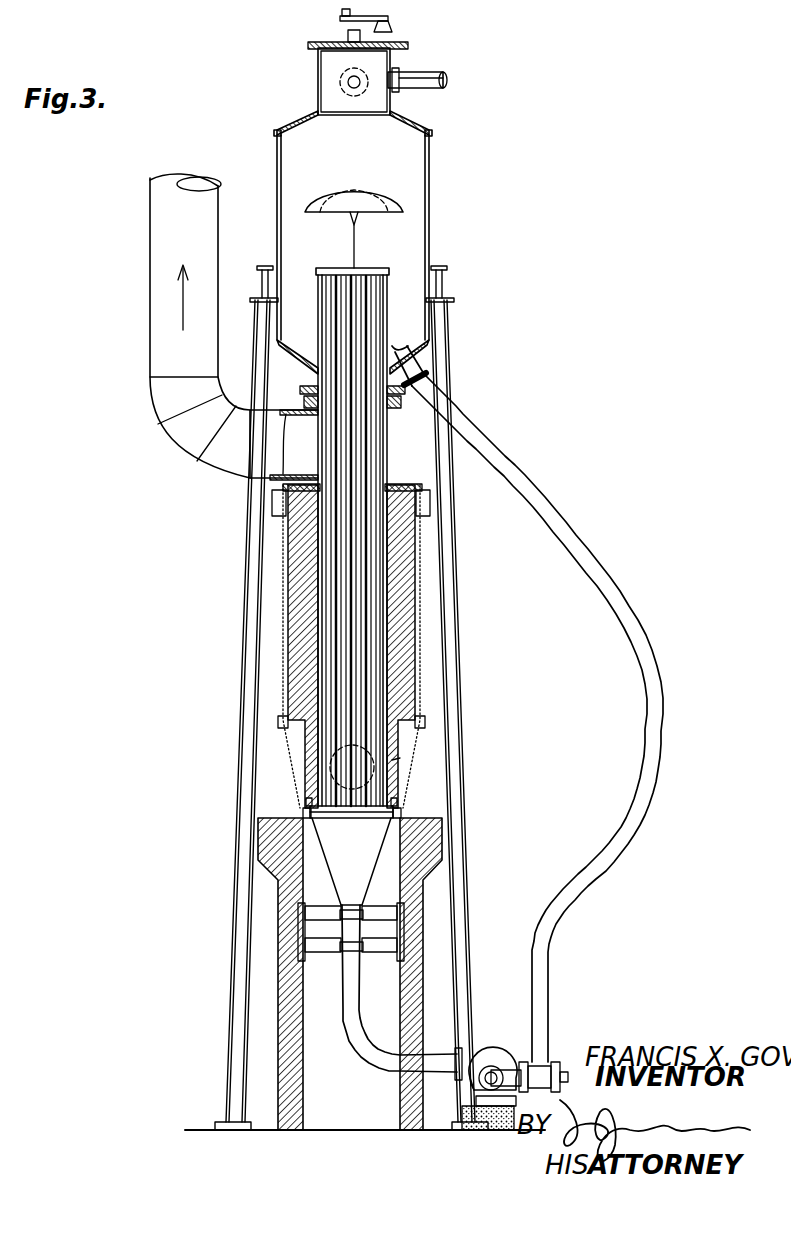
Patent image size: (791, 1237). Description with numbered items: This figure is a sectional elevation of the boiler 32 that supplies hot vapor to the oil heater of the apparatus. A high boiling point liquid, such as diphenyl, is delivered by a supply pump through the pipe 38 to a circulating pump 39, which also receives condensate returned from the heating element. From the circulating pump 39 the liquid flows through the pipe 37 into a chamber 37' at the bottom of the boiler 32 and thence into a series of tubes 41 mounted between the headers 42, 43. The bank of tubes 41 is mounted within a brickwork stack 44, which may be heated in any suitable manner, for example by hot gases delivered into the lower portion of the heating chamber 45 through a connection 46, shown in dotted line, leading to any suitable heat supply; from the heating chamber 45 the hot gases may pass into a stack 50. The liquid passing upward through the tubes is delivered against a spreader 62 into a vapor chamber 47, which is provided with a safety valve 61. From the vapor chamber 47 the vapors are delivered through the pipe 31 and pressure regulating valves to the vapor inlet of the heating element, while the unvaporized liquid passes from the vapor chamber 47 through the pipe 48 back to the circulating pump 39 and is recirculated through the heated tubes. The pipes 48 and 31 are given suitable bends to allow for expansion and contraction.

The pipe 31 is at (432, 82).
The boiler 32 is at (292, 582).
The pipe 37 is at (380, 1006).
The chamber 37' is at (269, 861).
The pipe 38 is at (540, 1098).
The circulating pump 39 is at (490, 1062).
The tubes 41 is at (326, 770).
The header 42 is at (382, 808).
The header 43 is at (370, 290).
The brickwork stack 44 is at (398, 582).
The heating chamber 45 is at (387, 790).
The connection 46 is at (375, 762).
The vapor chamber 47 is at (431, 196).
The pipe 48 is at (632, 606).
The stack 50 is at (165, 264).
The safety valve 61 is at (347, 20).
The spreader 62 is at (352, 208).